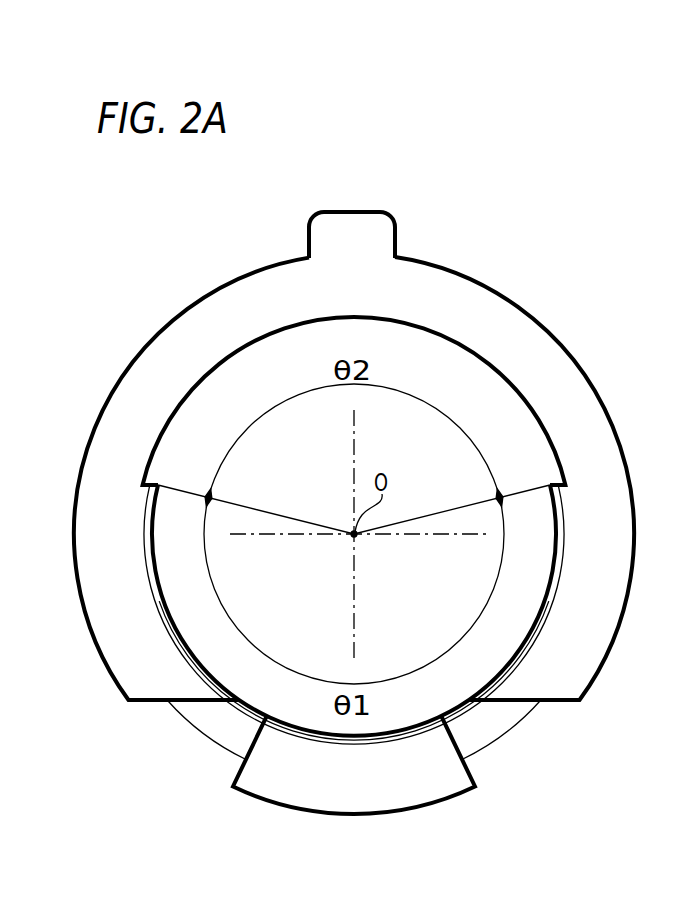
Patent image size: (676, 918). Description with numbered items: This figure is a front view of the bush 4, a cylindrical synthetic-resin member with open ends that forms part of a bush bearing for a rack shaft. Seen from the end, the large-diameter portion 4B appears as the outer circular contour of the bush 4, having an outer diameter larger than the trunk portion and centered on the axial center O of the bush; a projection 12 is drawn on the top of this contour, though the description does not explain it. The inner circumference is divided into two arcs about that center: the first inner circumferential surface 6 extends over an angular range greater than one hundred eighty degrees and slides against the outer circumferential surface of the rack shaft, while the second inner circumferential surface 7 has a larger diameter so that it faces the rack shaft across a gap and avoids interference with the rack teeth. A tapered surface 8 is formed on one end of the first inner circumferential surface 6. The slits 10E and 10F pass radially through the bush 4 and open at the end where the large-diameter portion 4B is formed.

The bush 4 is at (354, 441).
The large-diameter portion 4B is at (526, 312).
The first inner circumferential surface 6 is at (160, 556).
The second inner circumferential surface 7 is at (268, 335).
The tapered surface 8 is at (163, 610).
The slit 10E is at (152, 701).
The slit 10F is at (557, 701).
The protrusion 12 is at (352, 212).